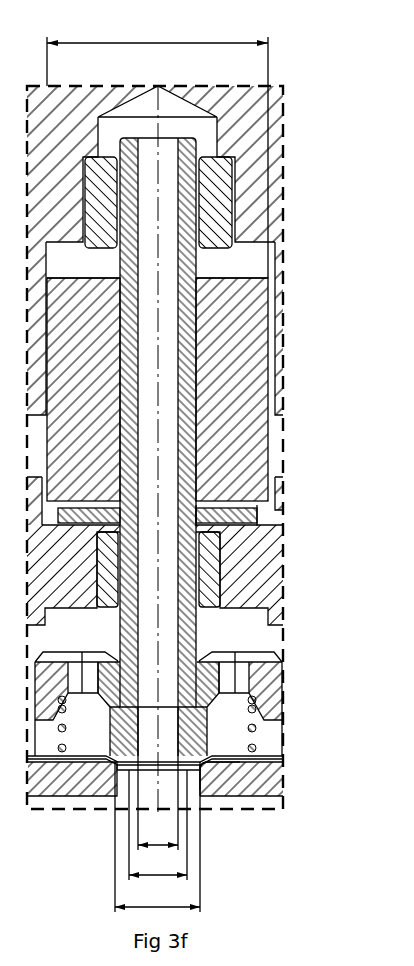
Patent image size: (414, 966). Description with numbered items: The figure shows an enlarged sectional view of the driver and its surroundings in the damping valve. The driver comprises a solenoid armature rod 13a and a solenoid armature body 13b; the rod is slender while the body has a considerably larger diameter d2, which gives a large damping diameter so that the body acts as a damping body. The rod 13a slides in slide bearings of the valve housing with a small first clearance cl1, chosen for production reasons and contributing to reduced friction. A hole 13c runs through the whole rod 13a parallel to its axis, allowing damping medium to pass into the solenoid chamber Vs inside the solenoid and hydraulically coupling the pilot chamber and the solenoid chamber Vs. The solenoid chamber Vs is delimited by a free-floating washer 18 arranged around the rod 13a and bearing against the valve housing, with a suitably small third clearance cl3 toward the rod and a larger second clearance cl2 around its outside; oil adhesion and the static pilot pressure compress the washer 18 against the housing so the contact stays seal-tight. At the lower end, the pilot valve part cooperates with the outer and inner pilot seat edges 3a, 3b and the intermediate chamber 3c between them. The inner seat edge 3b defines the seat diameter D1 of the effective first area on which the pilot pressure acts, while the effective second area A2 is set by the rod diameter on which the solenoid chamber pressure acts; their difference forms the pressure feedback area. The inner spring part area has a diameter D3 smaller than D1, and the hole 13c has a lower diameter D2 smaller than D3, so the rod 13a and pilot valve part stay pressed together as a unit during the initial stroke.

The diameter of the solenoid armature body d2 is at (157, 149).
The first clearance cl1 is at (195, 197).
The solenoid chamber Vs is at (237, 240).
The effective second area A2 is at (213, 263).
The solenoid armature rod 13a is at (214, 278).
The solenoid armature body 13b is at (232, 337).
The hole 13c is at (162, 395).
The third clearance cl3 is at (195, 513).
The second clearance cl2 is at (267, 510).
The washer 18 is at (197, 517).
The outer pilot seat edge 3a is at (207, 762).
The inner pilot seat edge 3b is at (203, 767).
The intermediate chamber 3c is at (230, 762).
The seat diameter D1 is at (157, 837).
The lower diameter of the solenoid armature rod hole D2 is at (158, 803).
The diameter of the inner spring part area D3 is at (158, 825).